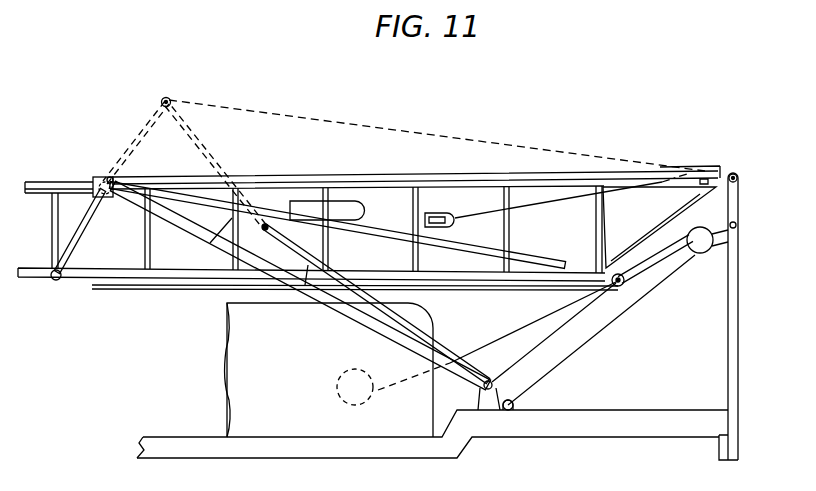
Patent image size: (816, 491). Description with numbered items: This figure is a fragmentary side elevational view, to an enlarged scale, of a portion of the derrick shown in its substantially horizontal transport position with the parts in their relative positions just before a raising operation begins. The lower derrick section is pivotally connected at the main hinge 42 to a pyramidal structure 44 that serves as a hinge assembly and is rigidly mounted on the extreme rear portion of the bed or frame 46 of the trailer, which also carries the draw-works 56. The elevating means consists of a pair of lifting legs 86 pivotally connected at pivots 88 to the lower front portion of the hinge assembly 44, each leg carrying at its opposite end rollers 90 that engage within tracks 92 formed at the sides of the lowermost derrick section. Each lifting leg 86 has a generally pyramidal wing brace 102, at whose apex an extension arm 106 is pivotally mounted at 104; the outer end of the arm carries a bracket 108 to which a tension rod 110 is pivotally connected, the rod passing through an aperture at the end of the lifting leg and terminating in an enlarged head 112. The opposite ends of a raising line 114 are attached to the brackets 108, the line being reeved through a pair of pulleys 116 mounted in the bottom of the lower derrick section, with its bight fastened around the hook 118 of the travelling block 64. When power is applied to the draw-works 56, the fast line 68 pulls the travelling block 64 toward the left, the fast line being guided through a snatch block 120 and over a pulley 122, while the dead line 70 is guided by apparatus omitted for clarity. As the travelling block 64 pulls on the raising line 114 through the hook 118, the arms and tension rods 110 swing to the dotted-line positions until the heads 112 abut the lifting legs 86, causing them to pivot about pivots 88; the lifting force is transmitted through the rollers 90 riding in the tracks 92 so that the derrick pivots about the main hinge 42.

The pivot 42 is at (737, 175).
The pyramidal structure 44 is at (737, 367).
The bed or frame 46 is at (645, 427).
The draw-works 56 is at (226, 390).
The traveling block 64 is at (342, 203).
The fast line 68 is at (130, 289).
The dead line 70 is at (150, 290).
The lifting legs 86 is at (356, 318).
The pivot 88 is at (492, 382).
The rollers 90 is at (90, 231).
The tracks 92 is at (530, 280).
The wing brace 102 is at (323, 290).
The pivotal mounting 104 is at (268, 212).
The extension arm 106 is at (172, 192).
The bracket 108 is at (171, 99).
The tension rod 110 is at (140, 132).
The enlarged head 112 is at (55, 281).
The raising line 114 is at (432, 168).
The pulleys 116 is at (693, 166).
The hook 118 is at (440, 220).
The snatch block 120 is at (707, 253).
The pulley 122 is at (623, 290).